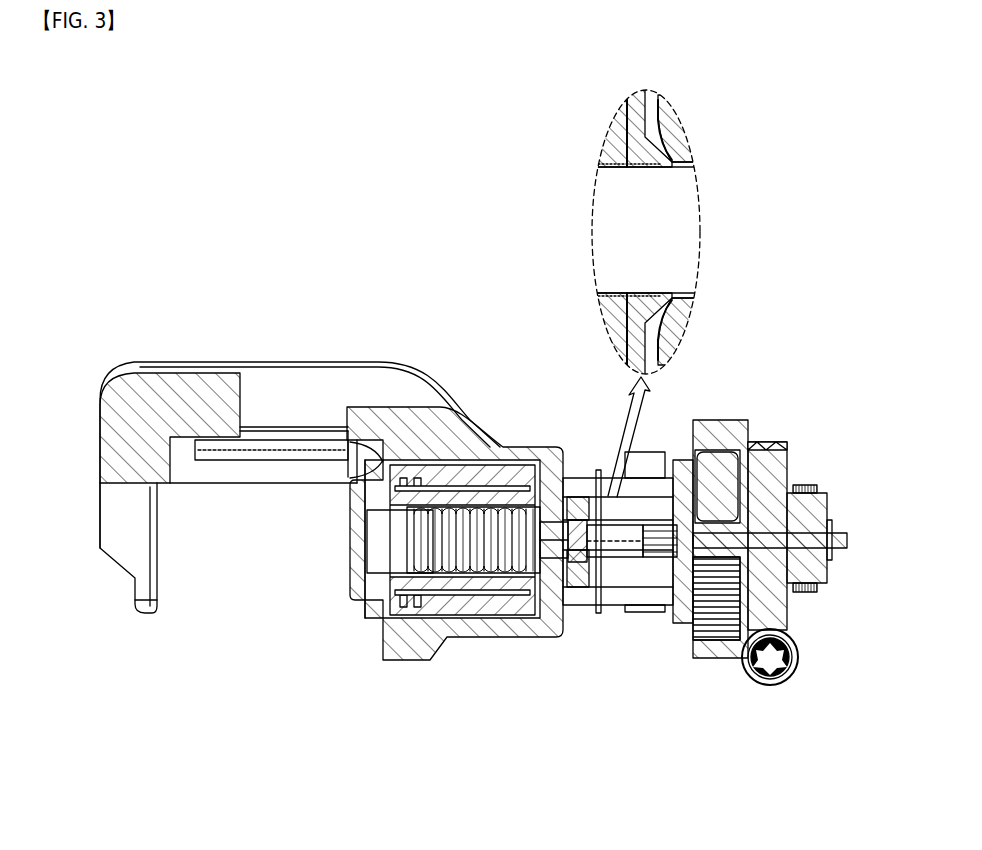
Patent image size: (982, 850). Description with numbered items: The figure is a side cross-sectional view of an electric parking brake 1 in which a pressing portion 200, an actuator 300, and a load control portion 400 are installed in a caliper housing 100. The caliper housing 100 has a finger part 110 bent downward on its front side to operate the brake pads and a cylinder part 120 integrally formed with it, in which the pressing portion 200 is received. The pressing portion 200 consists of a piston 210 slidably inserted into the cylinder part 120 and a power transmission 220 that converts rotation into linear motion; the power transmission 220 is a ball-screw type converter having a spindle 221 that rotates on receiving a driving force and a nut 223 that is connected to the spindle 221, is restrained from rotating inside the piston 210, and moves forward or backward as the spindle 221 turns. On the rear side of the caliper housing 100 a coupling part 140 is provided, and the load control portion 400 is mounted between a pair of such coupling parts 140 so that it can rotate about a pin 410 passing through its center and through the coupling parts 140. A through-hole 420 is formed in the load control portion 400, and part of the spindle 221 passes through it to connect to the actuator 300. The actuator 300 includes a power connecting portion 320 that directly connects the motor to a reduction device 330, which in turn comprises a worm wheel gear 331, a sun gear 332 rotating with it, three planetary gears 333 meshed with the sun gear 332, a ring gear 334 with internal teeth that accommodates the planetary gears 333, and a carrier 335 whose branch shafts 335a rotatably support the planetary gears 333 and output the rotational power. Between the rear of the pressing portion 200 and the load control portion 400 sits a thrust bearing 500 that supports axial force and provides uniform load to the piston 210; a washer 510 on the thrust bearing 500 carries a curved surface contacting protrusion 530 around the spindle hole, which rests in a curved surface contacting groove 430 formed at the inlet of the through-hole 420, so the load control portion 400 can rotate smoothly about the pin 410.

The electric parking brake 1 is at (361, 141).
The caliper housing 100 is at (210, 362).
The finger part 110 is at (115, 527).
The cylinder part 120 is at (518, 440).
The coupling part 140 is at (576, 485).
The pressing portion 200 is at (456, 627).
The piston 210 is at (364, 603).
The power transmission 220 is at (479, 606).
The spindle 221 is at (488, 605).
The nut 223 is at (455, 592).
The actuator 300 is at (736, 566).
The power connecting portion 320 is at (813, 655).
The reduction device 330 is at (727, 566).
The worm wheel gear 331 is at (762, 612).
The sun gear 332 is at (809, 619).
The planetary gear 333 is at (712, 612).
The ring gear 334 is at (716, 652).
The carrier 335 is at (680, 592).
The branch shaft 335a is at (727, 483).
The load control portion 400 is at (623, 567).
The pin 410 is at (650, 458).
The through-hole 420 is at (672, 167).
The curved surface contacting groove 430 is at (680, 292).
The thrust bearing 500 is at (608, 147).
The washer 510 is at (633, 113).
The curved surface contacting protrusion 530 is at (657, 163).